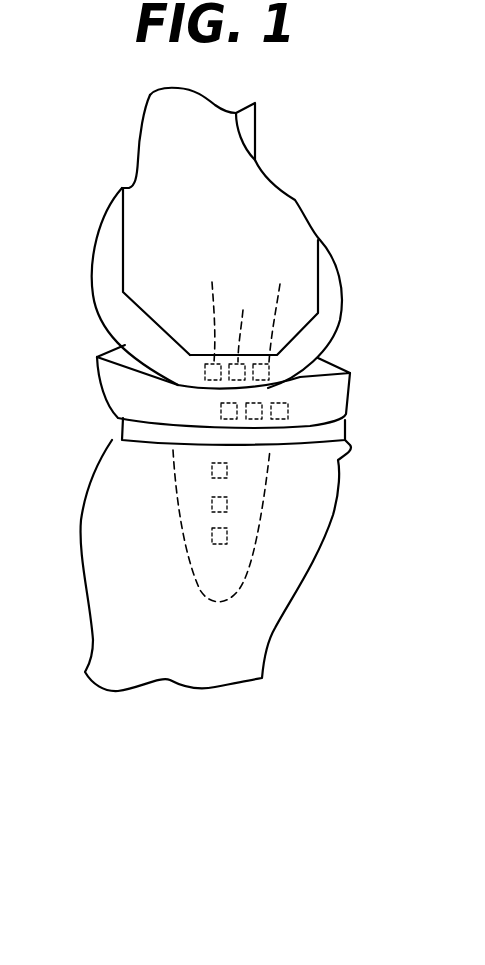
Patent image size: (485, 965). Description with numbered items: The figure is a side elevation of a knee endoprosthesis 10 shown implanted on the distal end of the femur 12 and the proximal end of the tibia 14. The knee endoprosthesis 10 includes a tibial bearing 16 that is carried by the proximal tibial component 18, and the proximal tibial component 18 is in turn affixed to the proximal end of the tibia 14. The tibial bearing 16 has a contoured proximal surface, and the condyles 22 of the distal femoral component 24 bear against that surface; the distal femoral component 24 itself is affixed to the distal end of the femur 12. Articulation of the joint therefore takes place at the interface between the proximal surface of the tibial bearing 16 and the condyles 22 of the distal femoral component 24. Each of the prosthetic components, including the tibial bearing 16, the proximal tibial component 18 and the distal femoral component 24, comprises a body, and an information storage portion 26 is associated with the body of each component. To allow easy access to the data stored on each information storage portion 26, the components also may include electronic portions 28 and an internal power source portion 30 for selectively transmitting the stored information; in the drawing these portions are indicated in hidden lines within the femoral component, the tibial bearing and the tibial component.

The knee endoprosthesis 10 is at (104, 312).
The femur 12 is at (258, 207).
The tibia 14 is at (238, 632).
The tibial bearing 16 is at (335, 392).
The proximal tibial component 18 is at (210, 535).
The condyles 22 is at (170, 380).
The distal femoral component 24 is at (112, 232).
The information storage portion 26 is at (140, 466).
The electronic portions 28 is at (155, 501).
The internal power source portion 30 is at (145, 578).